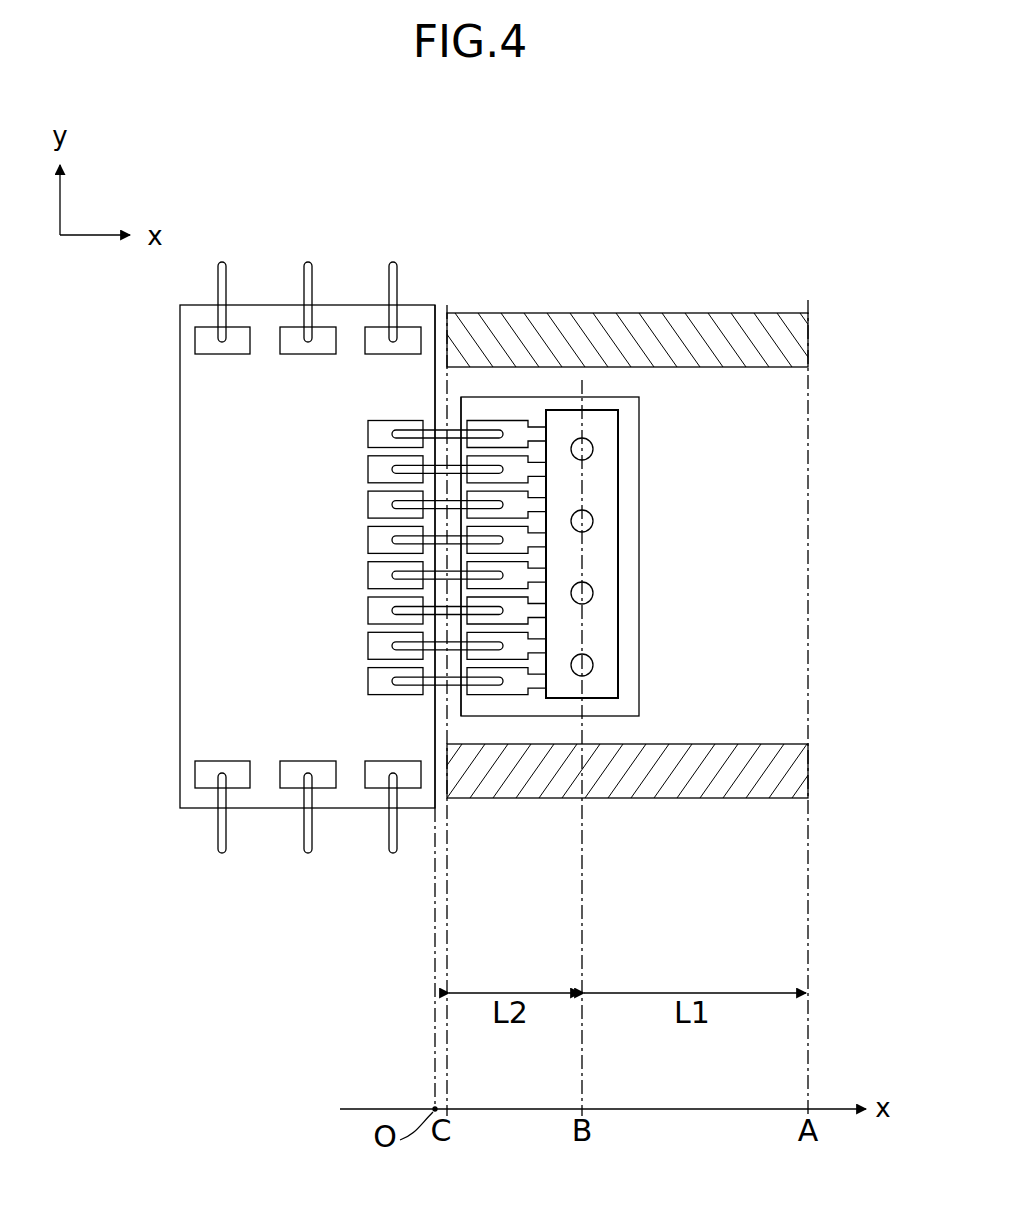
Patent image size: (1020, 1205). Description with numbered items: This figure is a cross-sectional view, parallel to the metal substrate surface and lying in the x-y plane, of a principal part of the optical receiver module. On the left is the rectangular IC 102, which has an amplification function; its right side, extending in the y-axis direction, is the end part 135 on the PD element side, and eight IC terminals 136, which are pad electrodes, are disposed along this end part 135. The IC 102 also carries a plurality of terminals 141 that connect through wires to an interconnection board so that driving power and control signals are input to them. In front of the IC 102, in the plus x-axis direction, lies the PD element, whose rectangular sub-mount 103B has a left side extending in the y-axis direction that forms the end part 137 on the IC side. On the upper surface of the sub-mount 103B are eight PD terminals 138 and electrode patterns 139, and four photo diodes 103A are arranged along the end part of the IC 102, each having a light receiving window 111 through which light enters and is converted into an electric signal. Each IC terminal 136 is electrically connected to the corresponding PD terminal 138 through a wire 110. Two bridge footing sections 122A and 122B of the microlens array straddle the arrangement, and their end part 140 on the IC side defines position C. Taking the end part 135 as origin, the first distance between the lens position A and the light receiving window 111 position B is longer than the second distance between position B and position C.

The IC 102 is at (256, 312).
The photo diode 103A is at (601, 468).
The sub-mount 103B is at (625, 707).
The wire 110 is at (400, 437).
The light receiving window 111 is at (593, 444).
The bridge footing section 122A is at (745, 790).
The bridge footing section 122B is at (768, 326).
The end part 135 is at (435, 303).
The IC terminal 136 is at (380, 645).
The end part 137 is at (462, 392).
The PD terminal 138 is at (510, 688).
The electrode pattern 139 is at (540, 435).
The end part 140 is at (447, 300).
The terminal 141 is at (196, 773).